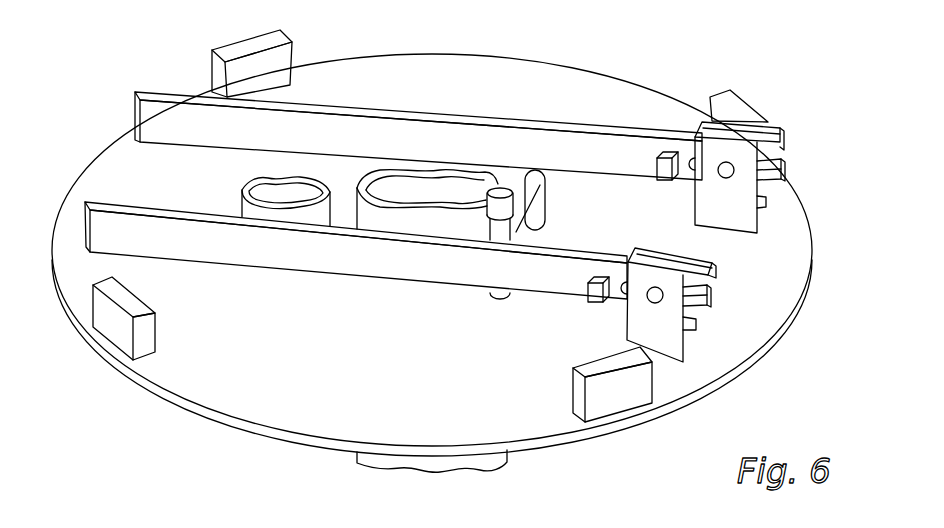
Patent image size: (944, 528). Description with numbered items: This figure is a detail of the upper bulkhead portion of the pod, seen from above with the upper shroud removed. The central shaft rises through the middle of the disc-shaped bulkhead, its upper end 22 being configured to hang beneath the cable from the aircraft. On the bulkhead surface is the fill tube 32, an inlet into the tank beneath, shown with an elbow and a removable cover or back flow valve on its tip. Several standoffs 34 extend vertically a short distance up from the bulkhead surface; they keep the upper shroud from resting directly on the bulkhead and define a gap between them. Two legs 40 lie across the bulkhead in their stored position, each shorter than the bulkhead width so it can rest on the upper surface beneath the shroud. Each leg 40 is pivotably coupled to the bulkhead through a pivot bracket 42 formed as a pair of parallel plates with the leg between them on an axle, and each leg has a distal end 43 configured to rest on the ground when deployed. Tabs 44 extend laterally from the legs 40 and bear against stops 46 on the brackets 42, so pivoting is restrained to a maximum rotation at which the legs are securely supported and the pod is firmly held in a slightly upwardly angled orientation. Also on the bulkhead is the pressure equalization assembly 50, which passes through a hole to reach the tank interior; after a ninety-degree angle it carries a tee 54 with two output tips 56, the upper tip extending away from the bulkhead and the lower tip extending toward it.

The upper end 22 is at (427, 183).
The fill tube 32 is at (240, 203).
The standoffs 34 is at (737, 103).
The legs 40 is at (367, 263).
The pivot brackets 42 is at (783, 155).
The distal ends 43 is at (232, 245).
The tabs 44 is at (656, 178).
The stops 46 is at (707, 285).
The pressure equalization assembly 50 is at (534, 189).
The tee 54 is at (525, 180).
The output tips 56 is at (505, 185).